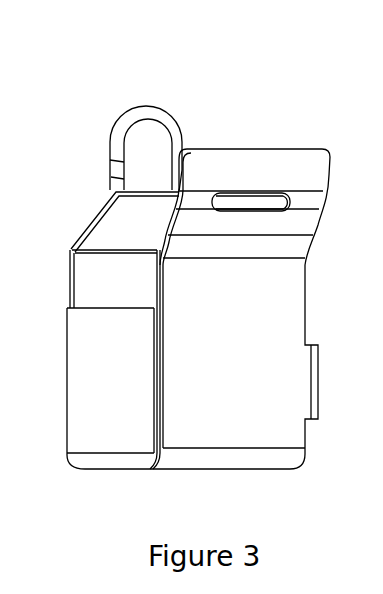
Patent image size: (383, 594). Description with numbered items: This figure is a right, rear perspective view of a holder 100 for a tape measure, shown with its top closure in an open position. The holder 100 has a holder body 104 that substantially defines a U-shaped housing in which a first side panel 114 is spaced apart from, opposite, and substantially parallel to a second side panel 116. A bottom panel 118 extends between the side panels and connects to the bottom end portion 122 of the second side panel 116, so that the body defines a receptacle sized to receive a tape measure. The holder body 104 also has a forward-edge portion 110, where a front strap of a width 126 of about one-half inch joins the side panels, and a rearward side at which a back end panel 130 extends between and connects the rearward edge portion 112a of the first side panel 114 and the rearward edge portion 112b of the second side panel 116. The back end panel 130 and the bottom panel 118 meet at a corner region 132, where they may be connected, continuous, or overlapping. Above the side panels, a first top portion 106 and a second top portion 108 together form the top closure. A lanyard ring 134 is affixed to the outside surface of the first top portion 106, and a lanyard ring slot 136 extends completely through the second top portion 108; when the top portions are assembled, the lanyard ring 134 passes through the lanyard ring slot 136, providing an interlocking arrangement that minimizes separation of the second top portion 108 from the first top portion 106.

The holder 100 is at (292, 87).
The holder body 104 is at (72, 250).
The first top portion 106 is at (113, 220).
The second top portion 108 is at (237, 170).
The forward-edge portion 110 is at (302, 300).
The rearward edge portion of first side panel 112a is at (77, 283).
The rearward edge portion of second side panel 112b is at (163, 347).
The first side panel 114 is at (93, 272).
The second side panel 116 is at (278, 422).
The bottom panel 118 is at (163, 467).
The bottom end portion of second side panel 122 is at (223, 448).
The width of front strap 126 is at (10, 371).
The back end panel 130 is at (108, 398).
The corner region 132 is at (112, 462).
The lanyard ring 134 is at (157, 117).
The lanyard ring slot 136 is at (287, 192).